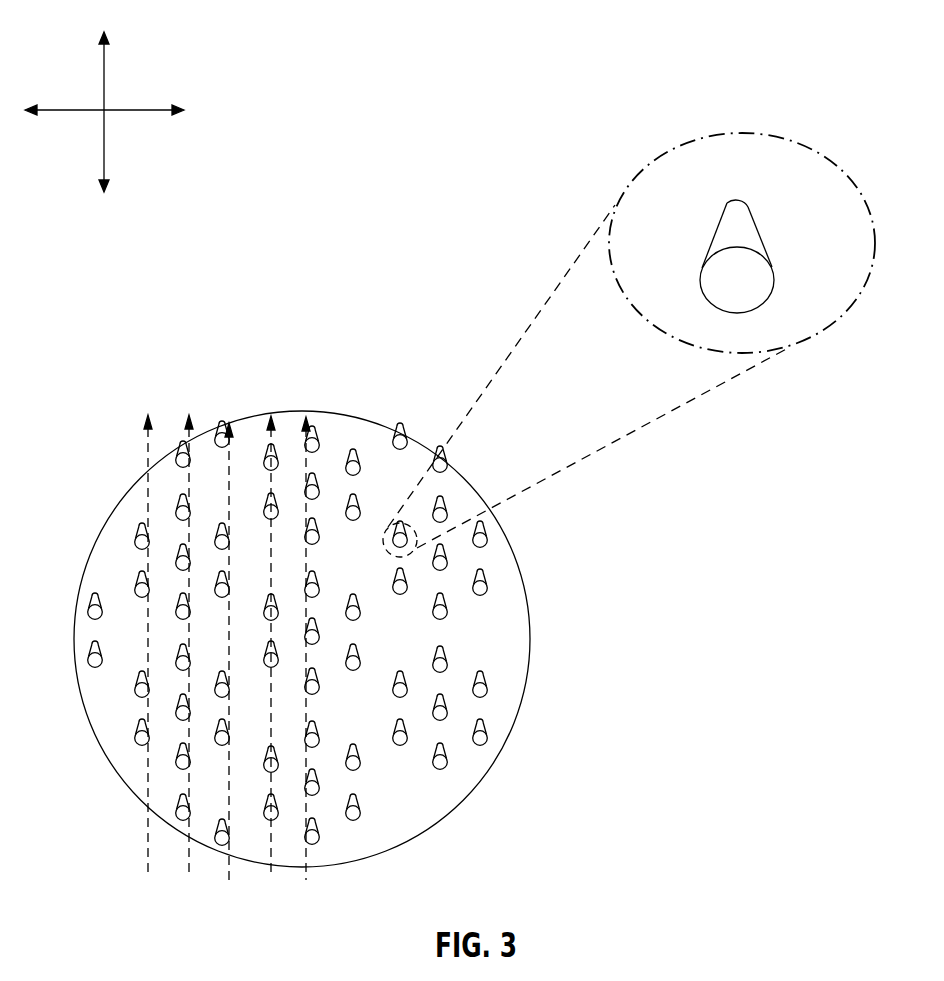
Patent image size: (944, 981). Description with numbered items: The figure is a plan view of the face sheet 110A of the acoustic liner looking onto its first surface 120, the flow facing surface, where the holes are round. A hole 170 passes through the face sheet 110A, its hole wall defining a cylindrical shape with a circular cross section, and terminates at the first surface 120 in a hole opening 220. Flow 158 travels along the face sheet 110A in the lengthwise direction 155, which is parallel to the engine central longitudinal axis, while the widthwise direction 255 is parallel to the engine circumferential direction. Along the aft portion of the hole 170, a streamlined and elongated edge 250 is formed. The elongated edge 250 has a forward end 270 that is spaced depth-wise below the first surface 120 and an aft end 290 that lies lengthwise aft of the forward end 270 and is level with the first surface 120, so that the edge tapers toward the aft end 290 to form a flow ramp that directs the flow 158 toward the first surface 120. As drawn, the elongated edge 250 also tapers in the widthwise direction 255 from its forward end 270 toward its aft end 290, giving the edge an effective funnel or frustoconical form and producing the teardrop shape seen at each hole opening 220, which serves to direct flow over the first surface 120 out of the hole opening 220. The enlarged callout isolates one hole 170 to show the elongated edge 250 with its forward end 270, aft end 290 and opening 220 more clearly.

The widthwise direction 255 is at (152, 108).
The lengthwise direction 155 is at (105, 148).
The flow 158 is at (307, 425).
The first surface 120 is at (395, 803).
The face sheet 110A is at (485, 693).
The elongated edge 250 is at (713, 237).
The aft end 290 is at (742, 200).
The forward end 270 is at (753, 243).
The hole 170 is at (750, 295).
The hole opening 220 is at (732, 280).